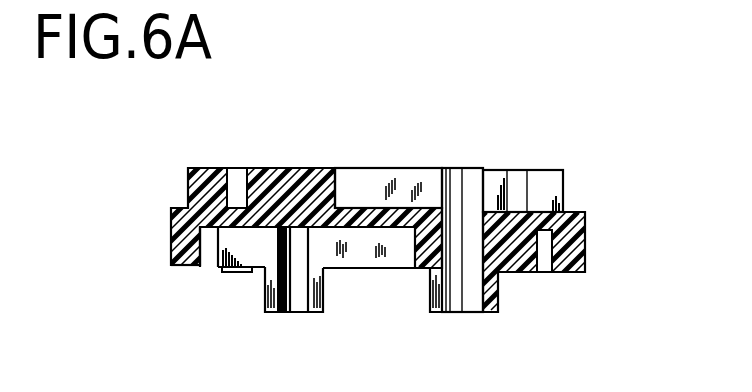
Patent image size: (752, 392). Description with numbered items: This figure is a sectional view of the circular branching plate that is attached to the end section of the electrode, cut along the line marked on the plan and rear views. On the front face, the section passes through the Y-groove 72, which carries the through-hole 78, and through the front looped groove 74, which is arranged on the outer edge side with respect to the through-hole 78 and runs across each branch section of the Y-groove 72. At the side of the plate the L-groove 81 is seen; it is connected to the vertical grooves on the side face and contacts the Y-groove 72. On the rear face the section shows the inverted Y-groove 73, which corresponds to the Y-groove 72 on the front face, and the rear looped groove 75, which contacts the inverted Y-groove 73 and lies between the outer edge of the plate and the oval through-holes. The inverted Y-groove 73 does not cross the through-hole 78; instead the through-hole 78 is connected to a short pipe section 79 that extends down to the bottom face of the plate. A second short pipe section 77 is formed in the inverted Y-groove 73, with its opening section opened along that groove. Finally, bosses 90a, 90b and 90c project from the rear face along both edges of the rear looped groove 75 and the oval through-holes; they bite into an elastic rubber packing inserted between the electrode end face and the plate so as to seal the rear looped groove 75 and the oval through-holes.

The Y-groove 72 is at (346, 168).
The inverted Y-groove 73 is at (360, 262).
The front looped groove 74 is at (518, 193).
The rear looped groove 75 is at (573, 239).
The short pipe section 77 is at (267, 305).
The through-hole 78 is at (473, 170).
The short pipe section 79 is at (431, 302).
The L-groove 81 is at (180, 190).
The boss 90a is at (193, 268).
The boss 90b is at (530, 272).
The boss 90c is at (227, 272).